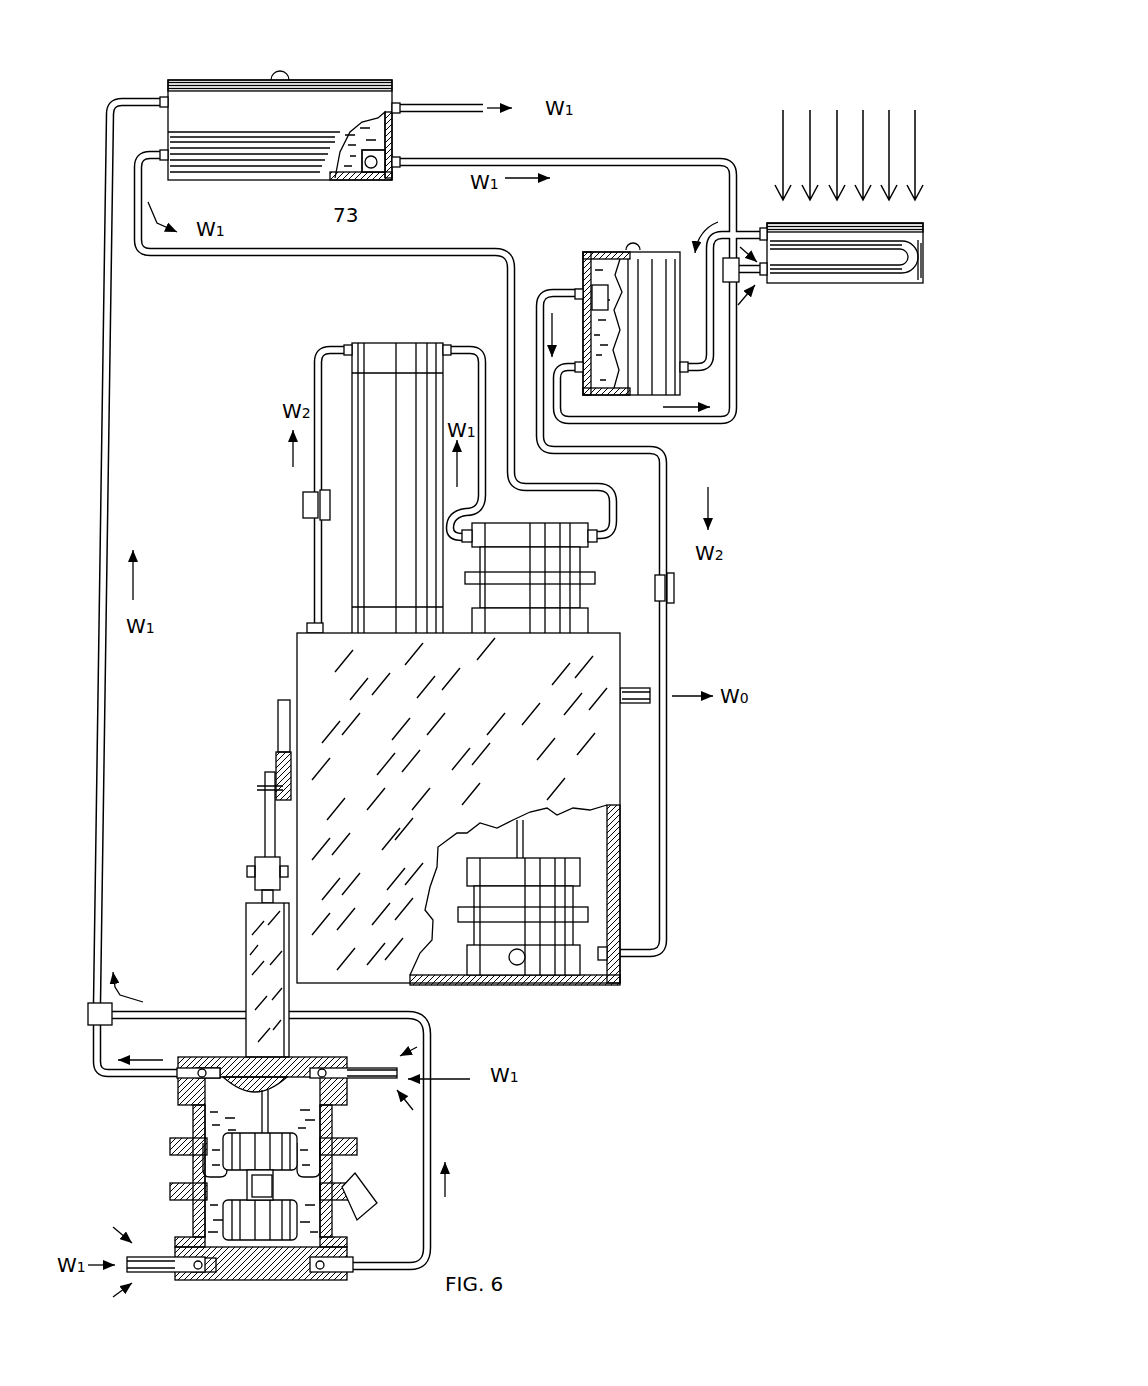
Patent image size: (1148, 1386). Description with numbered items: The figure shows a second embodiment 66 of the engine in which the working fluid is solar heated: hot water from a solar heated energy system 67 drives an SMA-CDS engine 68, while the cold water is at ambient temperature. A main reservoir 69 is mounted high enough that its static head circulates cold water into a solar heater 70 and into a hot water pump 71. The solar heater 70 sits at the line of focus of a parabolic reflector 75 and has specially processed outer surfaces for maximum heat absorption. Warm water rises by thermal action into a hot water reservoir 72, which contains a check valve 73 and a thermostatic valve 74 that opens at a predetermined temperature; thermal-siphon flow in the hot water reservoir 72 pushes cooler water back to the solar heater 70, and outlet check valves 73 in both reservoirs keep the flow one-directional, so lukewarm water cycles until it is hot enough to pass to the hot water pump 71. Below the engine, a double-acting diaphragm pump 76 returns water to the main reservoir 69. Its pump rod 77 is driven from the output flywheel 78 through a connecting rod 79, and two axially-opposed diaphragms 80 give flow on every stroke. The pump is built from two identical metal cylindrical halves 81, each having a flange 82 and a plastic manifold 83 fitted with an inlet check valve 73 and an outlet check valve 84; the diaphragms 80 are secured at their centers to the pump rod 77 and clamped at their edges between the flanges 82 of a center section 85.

The second embodiment 66 is at (582, 47).
The solar heated energy system 67 is at (745, 142).
The SMA-CDS engine 68 is at (405, 325).
The main reservoir 69 is at (350, 83).
The solar heater 70 is at (825, 277).
The hot water pump 71 is at (568, 833).
The hot water reservoir 72 is at (597, 252).
The check valve 73 is at (606, 372).
The thermostatic valve 74 is at (586, 286).
The parabolic reflector 75 is at (907, 287).
The double-acting diaphragm pump 76 is at (232, 1045).
The pump rod 77 is at (273, 1100).
The output flywheel 78 is at (278, 737).
The connecting rod 79 is at (265, 838).
The diaphragms 80 is at (297, 1186).
The metal cylindrical halves 81 is at (195, 1123).
The flange 82 is at (377, 1203).
The plastic manifold 83 is at (348, 1077).
The outlet check valve 84 is at (213, 1056).
The center section 85 is at (195, 1168).